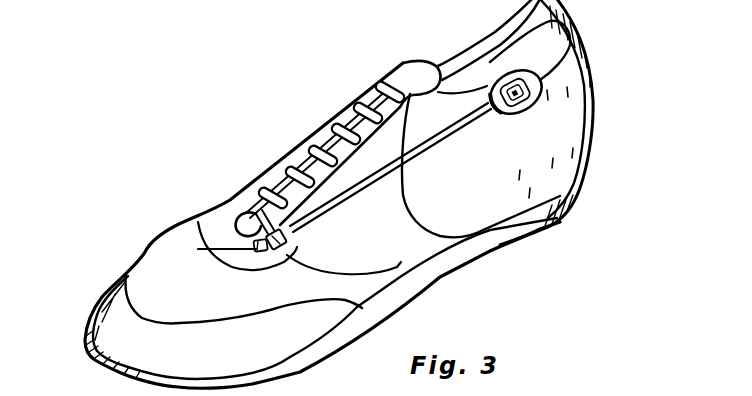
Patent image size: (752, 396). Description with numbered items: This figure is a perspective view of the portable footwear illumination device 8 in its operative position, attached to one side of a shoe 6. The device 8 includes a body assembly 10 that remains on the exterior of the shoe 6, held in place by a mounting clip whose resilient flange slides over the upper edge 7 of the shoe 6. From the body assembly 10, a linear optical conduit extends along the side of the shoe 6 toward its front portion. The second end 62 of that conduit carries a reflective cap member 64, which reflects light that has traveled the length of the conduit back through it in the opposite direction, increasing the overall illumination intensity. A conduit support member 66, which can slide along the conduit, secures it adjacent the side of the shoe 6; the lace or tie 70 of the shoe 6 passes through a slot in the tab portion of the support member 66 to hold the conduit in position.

The shoe 6 is at (473, 39).
The upper edge 7 is at (565, 58).
The portable footwear illumination device 8 is at (476, 128).
The body assembly 10 is at (533, 114).
The second end 62 is at (275, 254).
The reflective cap member 64 is at (203, 220).
The conduit support member 66 is at (290, 250).
The lace or tie 70 is at (243, 197).